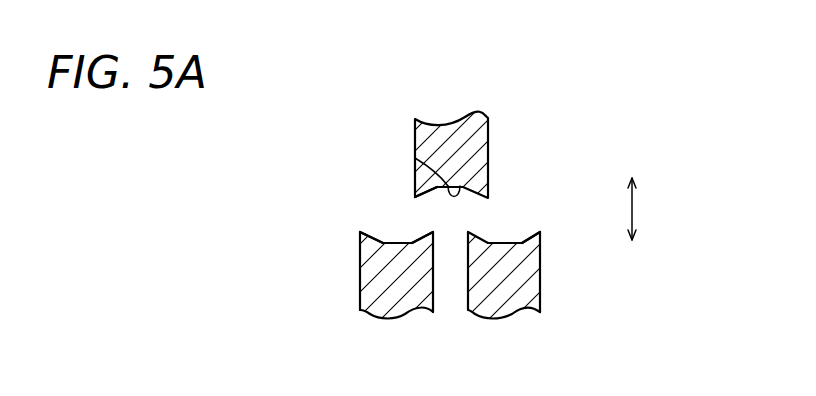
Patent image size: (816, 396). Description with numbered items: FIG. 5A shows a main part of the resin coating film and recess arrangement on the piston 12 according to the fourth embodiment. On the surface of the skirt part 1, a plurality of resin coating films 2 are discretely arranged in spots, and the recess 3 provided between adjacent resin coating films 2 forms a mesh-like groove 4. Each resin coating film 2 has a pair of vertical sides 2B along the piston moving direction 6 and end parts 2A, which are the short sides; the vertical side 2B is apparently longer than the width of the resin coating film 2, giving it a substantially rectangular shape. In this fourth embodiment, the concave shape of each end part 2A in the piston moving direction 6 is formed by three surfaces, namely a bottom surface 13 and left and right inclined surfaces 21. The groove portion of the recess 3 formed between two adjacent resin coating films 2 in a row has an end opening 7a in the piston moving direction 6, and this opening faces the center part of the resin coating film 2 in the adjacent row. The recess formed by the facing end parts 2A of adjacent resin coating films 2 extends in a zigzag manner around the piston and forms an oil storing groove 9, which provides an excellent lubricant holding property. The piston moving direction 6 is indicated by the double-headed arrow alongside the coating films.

The skirt part 1 is at (527, 143).
The piston 12 is at (474, 216).
The bottom surface 13 is at (441, 232).
The end opening 7a is at (415, 158).
The resin coating film 2 is at (362, 288).
The end part 2A is at (370, 251).
The vertical side 2B is at (367, 306).
The inclined surface 21 is at (417, 241).
The oil storing groove 9 is at (513, 216).
The recess 3 is at (573, 164).
The mesh-like groove 4 is at (451, 291).
The piston moving direction 6 is at (633, 208).